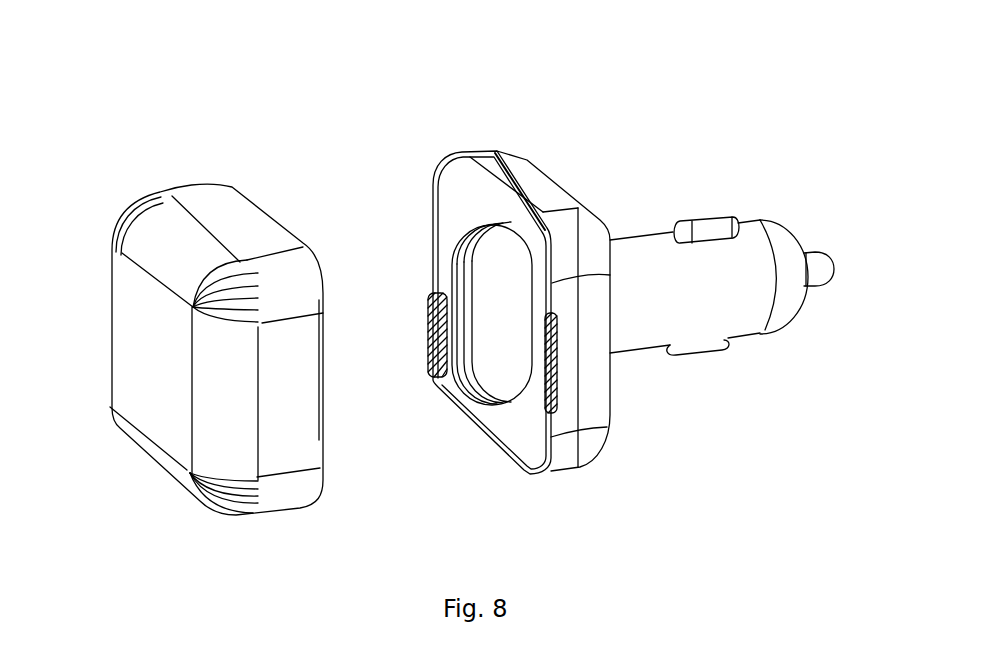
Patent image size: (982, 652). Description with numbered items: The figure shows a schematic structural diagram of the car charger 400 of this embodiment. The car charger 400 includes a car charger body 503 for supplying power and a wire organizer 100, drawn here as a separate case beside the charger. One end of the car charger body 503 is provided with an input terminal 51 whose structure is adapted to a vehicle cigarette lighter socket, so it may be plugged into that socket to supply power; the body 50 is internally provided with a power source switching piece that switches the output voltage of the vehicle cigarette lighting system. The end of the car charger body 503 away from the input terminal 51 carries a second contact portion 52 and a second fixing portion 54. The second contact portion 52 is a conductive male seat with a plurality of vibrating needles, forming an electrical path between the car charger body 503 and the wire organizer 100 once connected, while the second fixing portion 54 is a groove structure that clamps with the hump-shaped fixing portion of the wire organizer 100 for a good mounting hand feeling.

The car charger 400 is at (88, 59).
The wire organizer 100 is at (199, 185).
The car charger 50 is at (662, 437).
The input terminal 51 is at (817, 252).
The second contact portion 52 is at (430, 330).
The second fixing portion 54 is at (495, 267).
The car charger body 503 is at (660, 348).